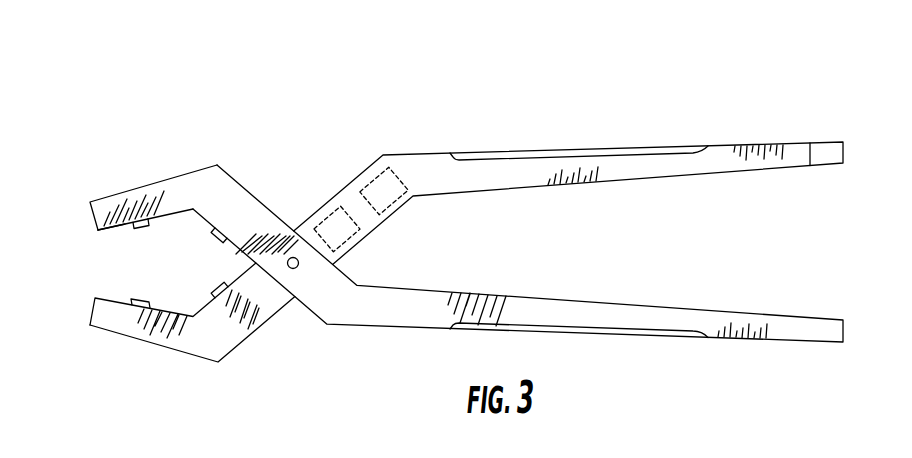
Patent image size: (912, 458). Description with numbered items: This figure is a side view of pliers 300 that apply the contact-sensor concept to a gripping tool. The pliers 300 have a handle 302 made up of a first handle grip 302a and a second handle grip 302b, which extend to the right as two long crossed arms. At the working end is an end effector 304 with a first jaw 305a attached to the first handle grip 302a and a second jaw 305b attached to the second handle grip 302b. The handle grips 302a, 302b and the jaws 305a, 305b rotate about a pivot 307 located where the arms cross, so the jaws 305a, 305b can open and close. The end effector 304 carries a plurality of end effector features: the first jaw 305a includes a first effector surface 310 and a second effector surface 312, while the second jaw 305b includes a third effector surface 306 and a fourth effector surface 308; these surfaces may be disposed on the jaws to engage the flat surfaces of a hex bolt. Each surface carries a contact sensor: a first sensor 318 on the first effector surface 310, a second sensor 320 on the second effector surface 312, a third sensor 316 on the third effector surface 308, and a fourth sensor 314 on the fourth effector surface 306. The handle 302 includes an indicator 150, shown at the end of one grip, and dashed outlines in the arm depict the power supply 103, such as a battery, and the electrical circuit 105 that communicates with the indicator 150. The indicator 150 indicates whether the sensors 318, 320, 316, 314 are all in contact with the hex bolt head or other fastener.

The pliers 300 is at (746, 70).
The handle 302 is at (595, 113).
The first handle grip 302a is at (708, 164).
The second handle grip 302b is at (733, 318).
The indicator 150 is at (832, 146).
The power supply 103 is at (406, 180).
The electrical circuit 105 is at (339, 207).
The pivot 307 is at (298, 266).
The end effector 304 is at (170, 143).
The first jaw 305a is at (187, 333).
The second jaw 305b is at (208, 183).
The third effector surface 306 is at (112, 231).
The fourth effector surface 308 is at (204, 222).
The first effector surface 310 is at (113, 297).
The second effector surface 312 is at (204, 305).
The fourth sensor 314 is at (135, 220).
The third sensor 316 is at (229, 226).
The first sensor 318 is at (133, 320).
The second sensor 320 is at (247, 310).